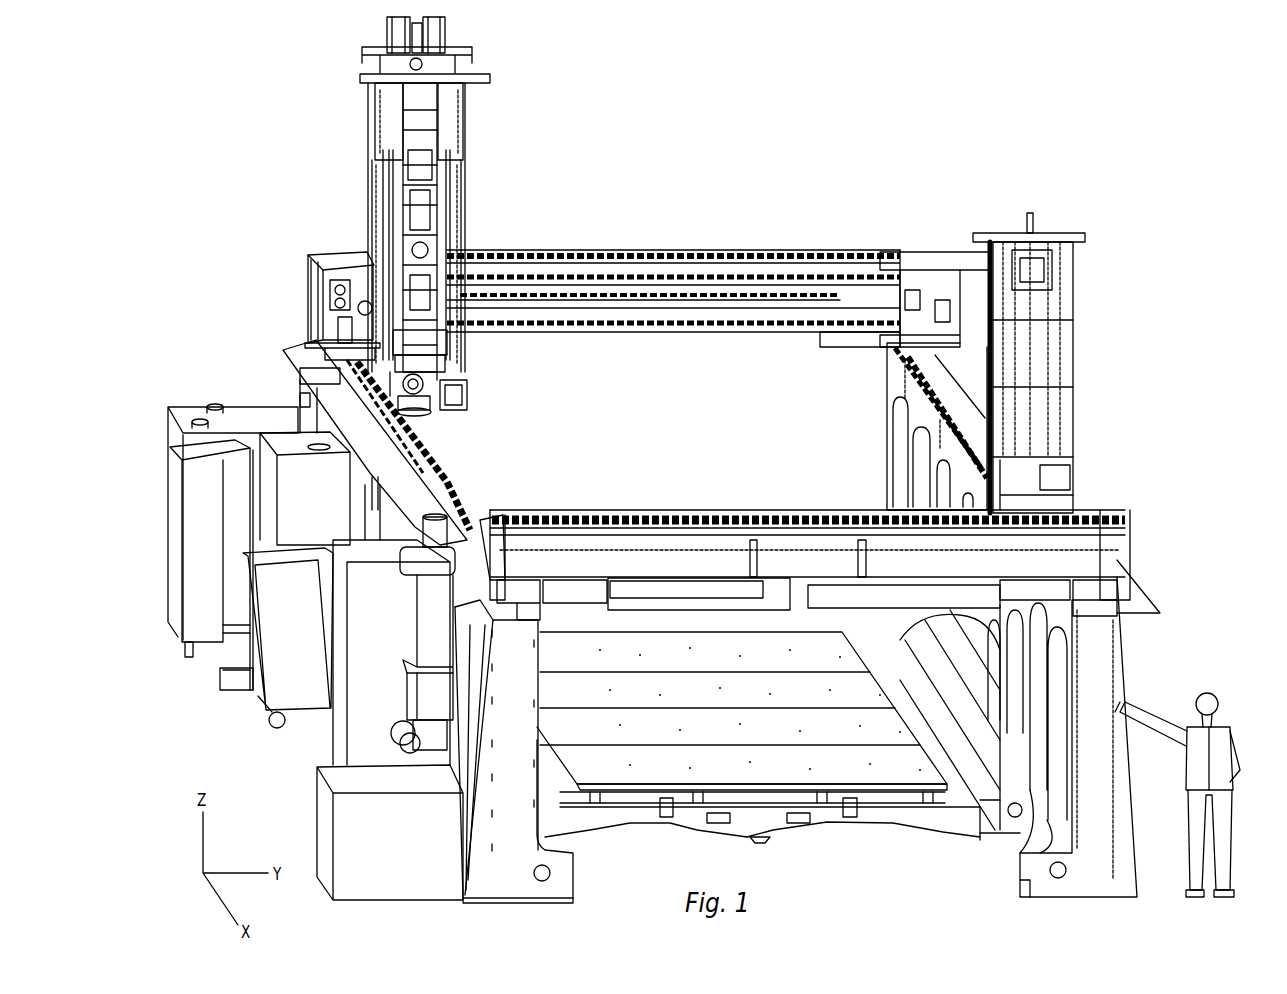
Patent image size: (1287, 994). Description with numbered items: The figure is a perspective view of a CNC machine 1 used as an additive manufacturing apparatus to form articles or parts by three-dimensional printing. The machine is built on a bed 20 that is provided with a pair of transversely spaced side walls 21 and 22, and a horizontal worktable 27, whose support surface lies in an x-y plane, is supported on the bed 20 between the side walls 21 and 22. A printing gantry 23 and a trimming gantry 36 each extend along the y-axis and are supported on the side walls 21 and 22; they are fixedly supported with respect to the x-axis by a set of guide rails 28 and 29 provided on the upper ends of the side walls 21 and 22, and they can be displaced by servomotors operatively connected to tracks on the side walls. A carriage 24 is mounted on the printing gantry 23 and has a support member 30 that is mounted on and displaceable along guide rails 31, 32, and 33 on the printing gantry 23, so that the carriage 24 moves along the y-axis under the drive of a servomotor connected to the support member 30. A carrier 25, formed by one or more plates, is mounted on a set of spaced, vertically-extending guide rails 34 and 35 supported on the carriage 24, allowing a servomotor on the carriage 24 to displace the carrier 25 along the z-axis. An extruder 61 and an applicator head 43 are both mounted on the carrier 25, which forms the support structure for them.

The CNC machine 1 is at (1063, 143).
The bed 20 is at (692, 817).
The side wall 21 is at (525, 738).
The side wall 22 is at (1097, 765).
The printing gantry 23 is at (878, 254).
The carriage 24 is at (367, 209).
The carrier 25 is at (466, 147).
The horizontal worktable 27 is at (710, 720).
The guide rail 28 is at (455, 482).
The guide rail 29 is at (910, 380).
The support member 30 is at (365, 240).
The guide rail 31 is at (737, 252).
The guide rail 32 is at (665, 272).
The guide rail 33 is at (695, 328).
The guide rail 34 is at (378, 187).
The guide rail 35 is at (440, 332).
The trimming gantry 36 is at (1080, 512).
The applicator head 43 is at (437, 421).
The extruder 61 is at (428, 250).